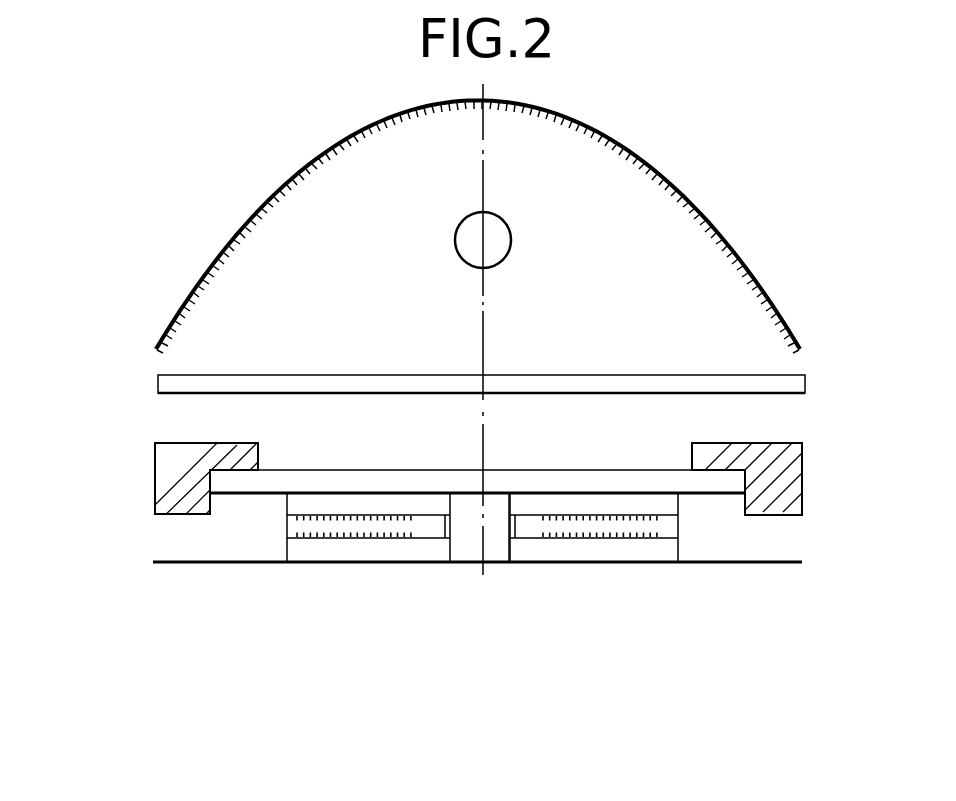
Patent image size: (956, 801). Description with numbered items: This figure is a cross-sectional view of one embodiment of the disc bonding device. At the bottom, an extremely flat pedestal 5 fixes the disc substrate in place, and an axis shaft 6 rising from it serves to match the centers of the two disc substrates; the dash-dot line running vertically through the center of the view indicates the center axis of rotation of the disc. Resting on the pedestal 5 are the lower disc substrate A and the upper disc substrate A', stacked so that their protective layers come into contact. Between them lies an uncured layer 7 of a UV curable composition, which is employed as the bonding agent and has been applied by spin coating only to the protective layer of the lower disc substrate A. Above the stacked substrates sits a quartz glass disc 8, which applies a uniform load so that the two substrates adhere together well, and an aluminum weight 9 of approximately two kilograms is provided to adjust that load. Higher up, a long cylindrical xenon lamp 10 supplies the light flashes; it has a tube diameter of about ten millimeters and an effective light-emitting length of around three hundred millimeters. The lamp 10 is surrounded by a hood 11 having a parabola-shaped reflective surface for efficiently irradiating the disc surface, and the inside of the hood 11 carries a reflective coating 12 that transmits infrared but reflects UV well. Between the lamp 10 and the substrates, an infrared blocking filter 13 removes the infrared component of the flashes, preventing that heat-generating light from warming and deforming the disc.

The pedestal 5 is at (722, 568).
The axis shaft 6 is at (478, 545).
The uncured layer of UV curable composition 7 is at (532, 530).
The quartz glass disc 8 is at (270, 480).
The aluminum weight 9 is at (155, 477).
The xenon lamp 10 is at (455, 240).
The hood 11 is at (687, 193).
The reflective coating 12 is at (713, 232).
The infrared blocking filter 13 is at (337, 375).
The disc substrate A is at (364, 605).
The disc substrate A' is at (354, 612).